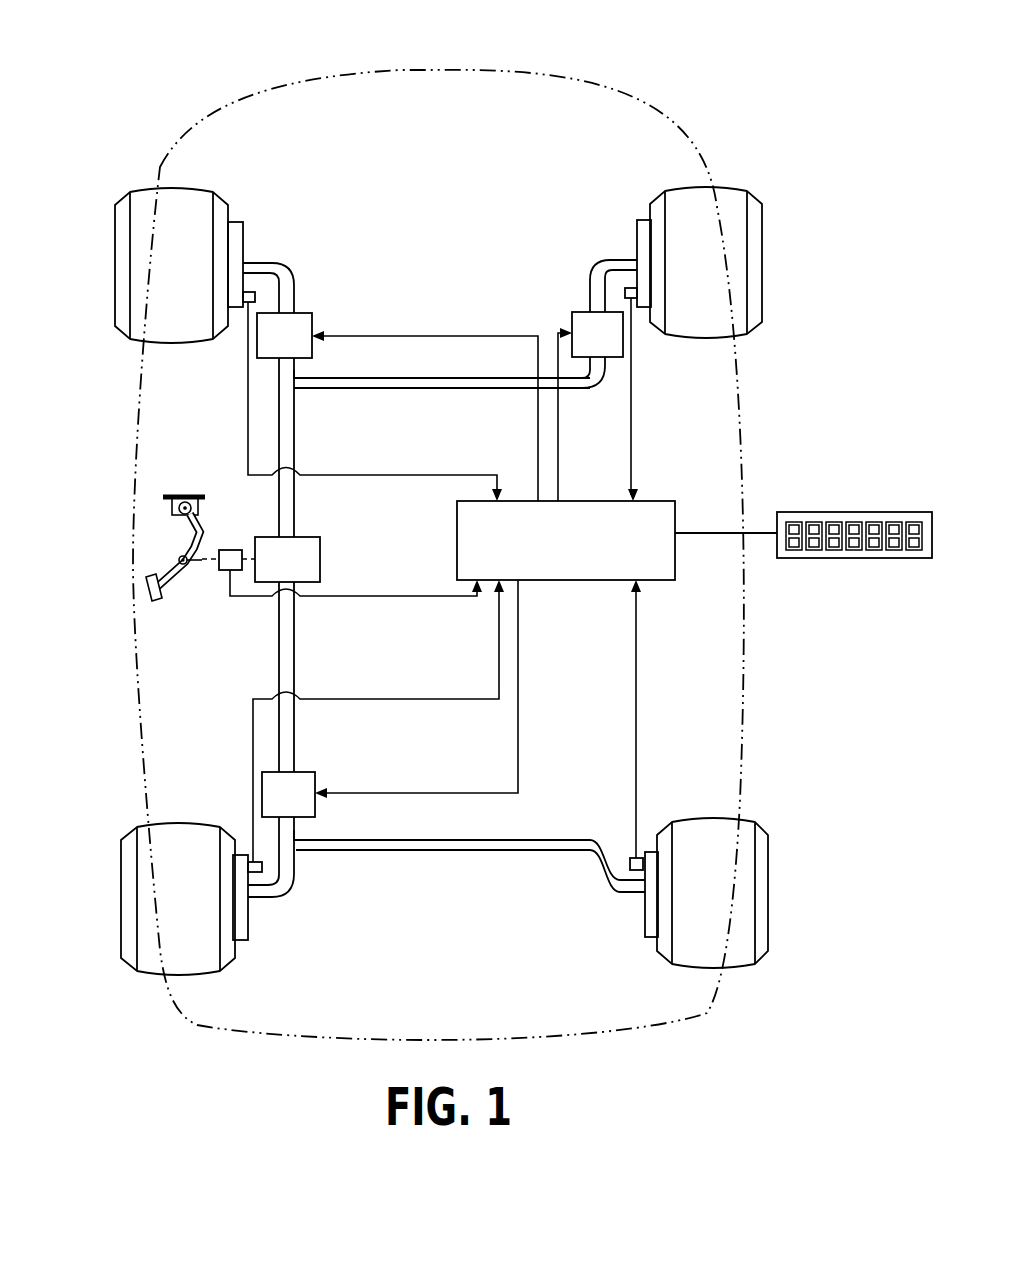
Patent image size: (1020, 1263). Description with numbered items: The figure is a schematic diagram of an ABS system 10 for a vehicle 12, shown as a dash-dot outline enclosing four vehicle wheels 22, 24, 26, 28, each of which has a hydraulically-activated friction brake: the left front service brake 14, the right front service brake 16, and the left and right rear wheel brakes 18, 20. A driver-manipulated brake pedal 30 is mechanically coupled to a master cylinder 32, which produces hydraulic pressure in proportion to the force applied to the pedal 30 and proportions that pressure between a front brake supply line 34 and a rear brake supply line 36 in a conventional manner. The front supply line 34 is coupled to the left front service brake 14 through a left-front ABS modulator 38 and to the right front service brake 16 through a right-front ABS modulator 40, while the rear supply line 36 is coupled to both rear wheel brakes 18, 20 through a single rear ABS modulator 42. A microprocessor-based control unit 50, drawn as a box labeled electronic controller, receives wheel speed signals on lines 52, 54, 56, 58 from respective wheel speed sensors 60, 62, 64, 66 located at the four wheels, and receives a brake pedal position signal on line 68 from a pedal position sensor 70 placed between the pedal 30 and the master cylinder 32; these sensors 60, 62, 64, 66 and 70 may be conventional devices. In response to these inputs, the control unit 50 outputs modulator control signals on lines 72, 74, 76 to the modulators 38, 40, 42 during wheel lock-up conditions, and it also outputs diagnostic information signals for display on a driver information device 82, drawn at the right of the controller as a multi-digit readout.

The ABS system 10 is at (381, 165).
The vehicle 12 is at (706, 128).
The left front service brake 14 is at (237, 225).
The right front service brake 16 is at (641, 224).
The left rear wheel brake 18 is at (247, 934).
The right rear wheel brake 20 is at (651, 932).
The vehicle wheel 22 is at (116, 262).
The vehicle wheel 24 is at (762, 256).
The vehicle wheel 26 is at (122, 890).
The vehicle wheel 28 is at (768, 892).
The brake pedal 30 is at (172, 578).
The master cylinder 32 is at (317, 558).
The front brake supply line 34 is at (285, 440).
The rear brake supply line 36 is at (285, 642).
The left-front ABS modulator 38 is at (312, 318).
The right-front ABS modulator 40 is at (572, 318).
The rear ABS modulator 42 is at (314, 778).
The control unit 50 is at (655, 503).
The wheel speed signal line 52 is at (249, 440).
The wheel speed signal line 54 is at (636, 442).
The wheel speed signal line 56 is at (372, 698).
The wheel speed signal line 58 is at (640, 700).
The wheel speed sensor 60 is at (247, 303).
The wheel speed sensor 62 is at (632, 299).
The wheel speed sensor 64 is at (251, 860).
The wheel speed sensor 66 is at (640, 856).
The pedal position signal line 68 is at (373, 598).
The pedal position sensor 70 is at (232, 549).
The modulator control signal line 72 is at (538, 366).
The modulator control signal line 74 is at (559, 440).
The modulator control signal line 76 is at (521, 738).
The driver information device 82 is at (853, 512).